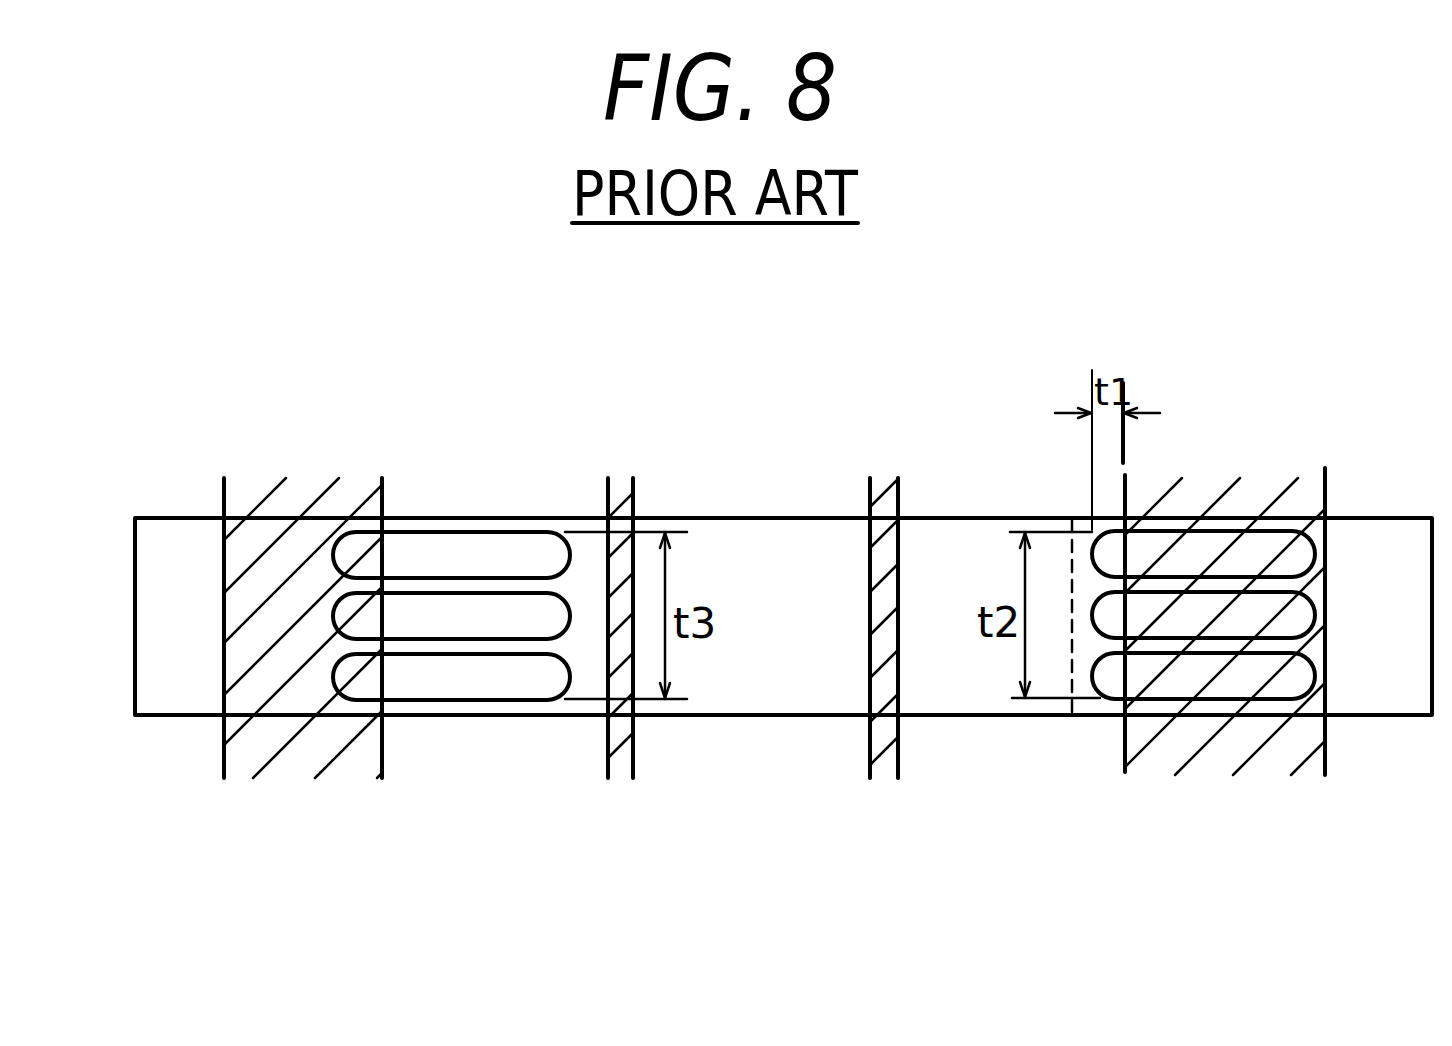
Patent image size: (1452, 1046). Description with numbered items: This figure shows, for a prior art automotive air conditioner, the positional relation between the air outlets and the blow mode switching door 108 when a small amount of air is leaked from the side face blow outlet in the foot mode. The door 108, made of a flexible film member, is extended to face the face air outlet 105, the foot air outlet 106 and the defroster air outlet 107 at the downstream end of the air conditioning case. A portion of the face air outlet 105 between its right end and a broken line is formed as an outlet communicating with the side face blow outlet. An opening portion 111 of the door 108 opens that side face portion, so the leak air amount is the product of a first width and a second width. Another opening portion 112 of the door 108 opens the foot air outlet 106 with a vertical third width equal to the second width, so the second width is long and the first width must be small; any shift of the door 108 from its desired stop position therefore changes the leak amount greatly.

The face air outlet 105 is at (985, 470).
The foot air outlet 106 is at (487, 472).
The defroster air outlet 107 is at (755, 472).
The blow mode switching door 108 is at (788, 688).
The opening portion 111 is at (1227, 683).
The opening portion 112 is at (475, 688).